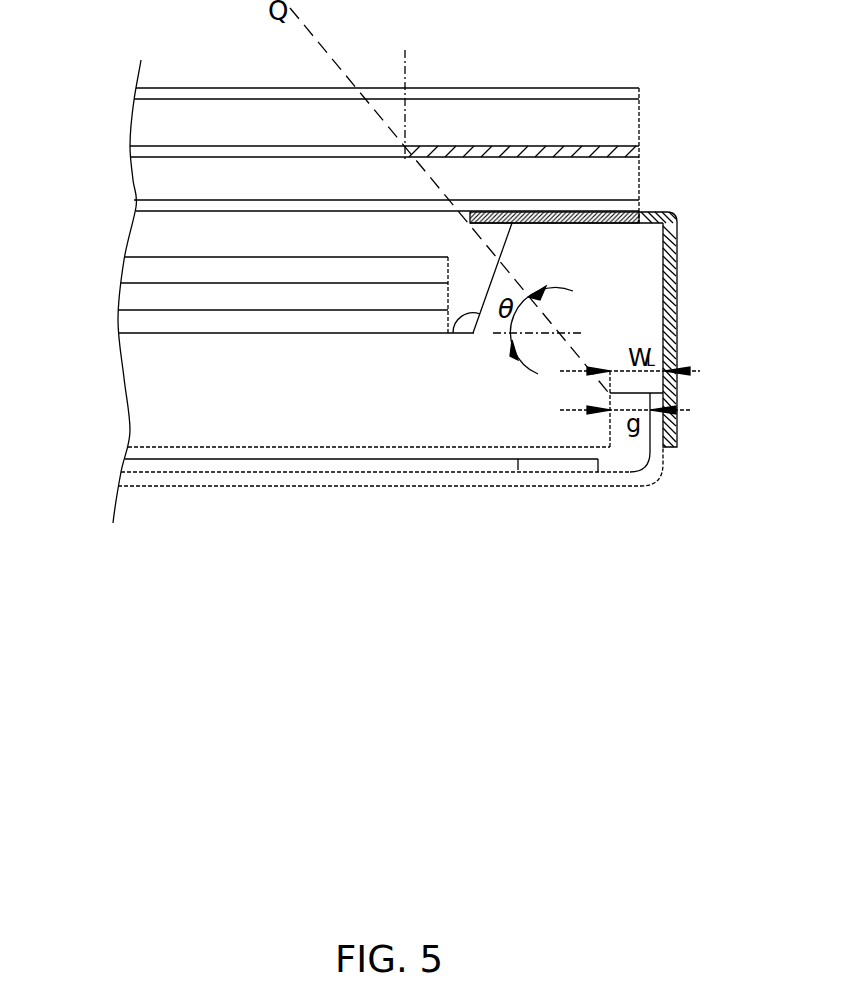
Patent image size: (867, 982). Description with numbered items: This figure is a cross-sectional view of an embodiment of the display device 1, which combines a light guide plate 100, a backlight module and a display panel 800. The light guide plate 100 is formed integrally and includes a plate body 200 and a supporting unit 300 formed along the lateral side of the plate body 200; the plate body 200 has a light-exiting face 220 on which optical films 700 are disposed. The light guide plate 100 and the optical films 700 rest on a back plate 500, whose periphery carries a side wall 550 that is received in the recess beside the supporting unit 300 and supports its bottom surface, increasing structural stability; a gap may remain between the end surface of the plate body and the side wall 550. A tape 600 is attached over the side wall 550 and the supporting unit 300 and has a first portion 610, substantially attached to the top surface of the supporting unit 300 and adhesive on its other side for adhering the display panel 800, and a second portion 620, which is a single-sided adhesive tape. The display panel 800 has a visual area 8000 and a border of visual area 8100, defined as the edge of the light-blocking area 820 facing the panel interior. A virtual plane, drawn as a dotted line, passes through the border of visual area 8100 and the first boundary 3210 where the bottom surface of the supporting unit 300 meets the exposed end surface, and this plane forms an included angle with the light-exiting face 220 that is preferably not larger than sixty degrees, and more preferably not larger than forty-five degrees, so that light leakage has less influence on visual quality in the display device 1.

The display device 1 is at (60, 32).
The light guide plate 100 is at (122, 379).
The plate body 200 is at (363, 417).
The light-exiting face 220 is at (483, 313).
The supporting unit 300 is at (650, 313).
The first boundary 3210 is at (616, 391).
The back plate 500 is at (122, 478).
The side wall 550 is at (657, 455).
The tape 600 is at (621, 304).
The first portion 610 is at (614, 222).
The second portion 620 is at (668, 267).
The optical film 700 is at (103, 250).
The display panel 800 is at (386, 155).
The light-blocking area 820 is at (611, 152).
The visual area 8000 is at (392, 75).
The border of visual area 8100 is at (407, 140).